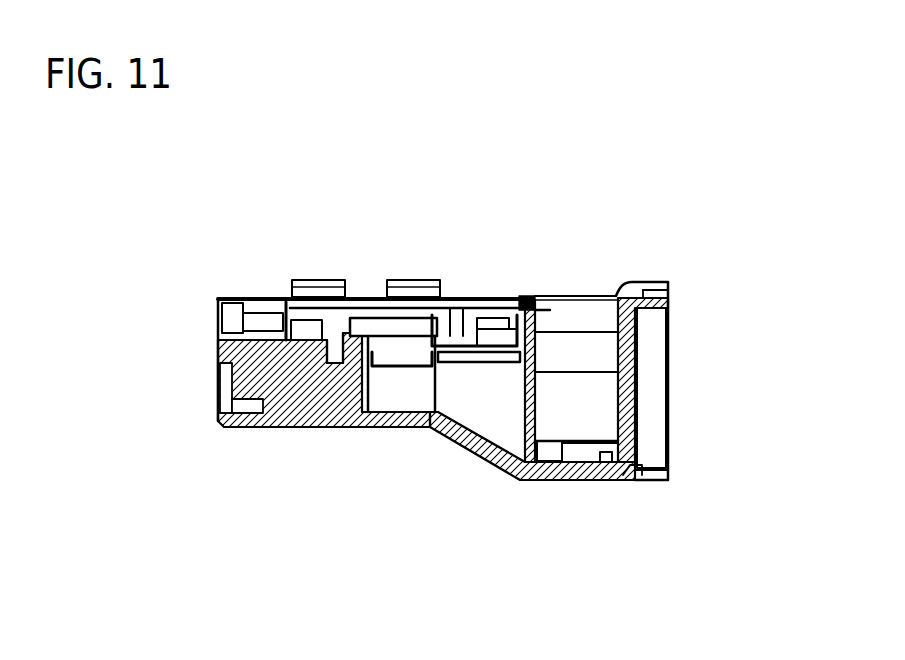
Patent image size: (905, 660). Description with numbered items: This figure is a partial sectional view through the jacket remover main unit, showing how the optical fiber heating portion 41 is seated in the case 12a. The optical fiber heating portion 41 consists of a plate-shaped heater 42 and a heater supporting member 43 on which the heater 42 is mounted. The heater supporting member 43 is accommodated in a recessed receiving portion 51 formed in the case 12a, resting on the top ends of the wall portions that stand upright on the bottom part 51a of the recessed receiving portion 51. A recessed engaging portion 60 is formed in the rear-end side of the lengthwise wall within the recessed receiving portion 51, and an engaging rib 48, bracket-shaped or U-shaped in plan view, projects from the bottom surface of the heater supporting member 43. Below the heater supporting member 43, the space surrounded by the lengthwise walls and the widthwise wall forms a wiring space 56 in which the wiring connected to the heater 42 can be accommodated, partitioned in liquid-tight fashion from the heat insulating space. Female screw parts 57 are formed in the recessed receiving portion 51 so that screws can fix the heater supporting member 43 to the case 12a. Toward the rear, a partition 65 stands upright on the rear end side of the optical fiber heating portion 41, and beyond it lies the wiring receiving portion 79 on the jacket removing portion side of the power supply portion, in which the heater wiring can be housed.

The heater 42 is at (274, 296).
The optical fiber heating portion 41 is at (465, 284).
The heater supporting member 43 is at (487, 298).
The recessed engaging portion 60 is at (405, 352).
The wiring receiving portion 79 is at (572, 392).
The female screw part 57 is at (331, 364).
The recessed receiving portion 51 is at (348, 403).
The bottom part 51a is at (384, 398).
The wiring space 56 is at (412, 397).
The engaging rib 48 is at (427, 366).
The partition 65 is at (515, 396).
The case 12a is at (535, 482).